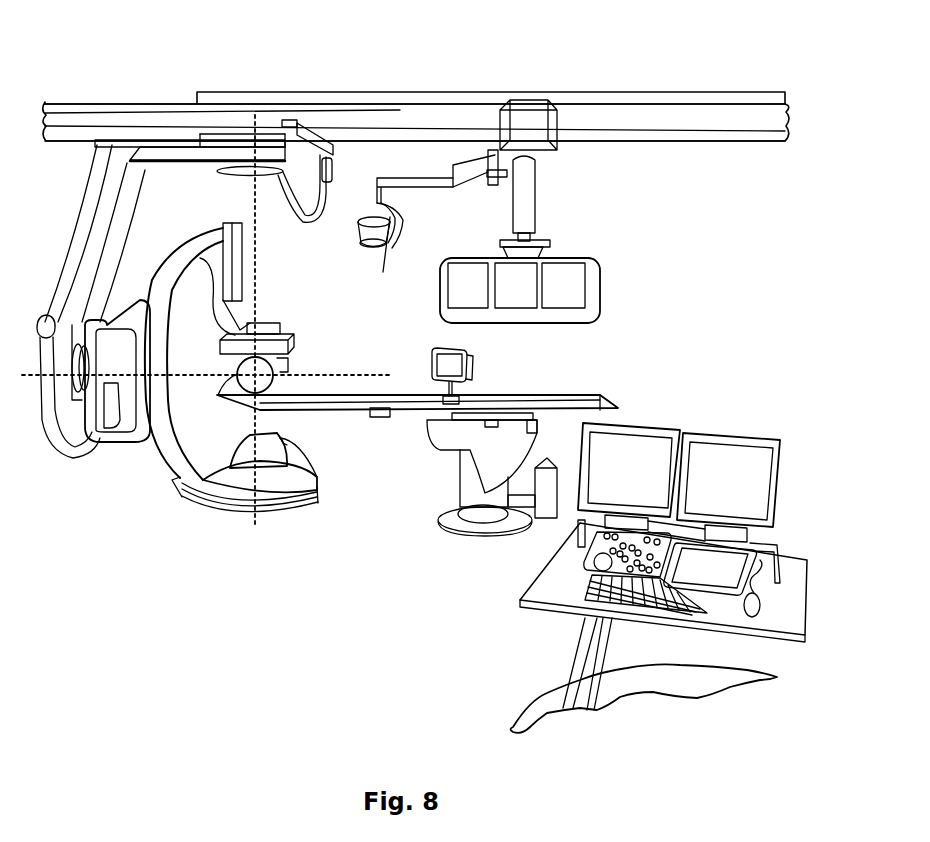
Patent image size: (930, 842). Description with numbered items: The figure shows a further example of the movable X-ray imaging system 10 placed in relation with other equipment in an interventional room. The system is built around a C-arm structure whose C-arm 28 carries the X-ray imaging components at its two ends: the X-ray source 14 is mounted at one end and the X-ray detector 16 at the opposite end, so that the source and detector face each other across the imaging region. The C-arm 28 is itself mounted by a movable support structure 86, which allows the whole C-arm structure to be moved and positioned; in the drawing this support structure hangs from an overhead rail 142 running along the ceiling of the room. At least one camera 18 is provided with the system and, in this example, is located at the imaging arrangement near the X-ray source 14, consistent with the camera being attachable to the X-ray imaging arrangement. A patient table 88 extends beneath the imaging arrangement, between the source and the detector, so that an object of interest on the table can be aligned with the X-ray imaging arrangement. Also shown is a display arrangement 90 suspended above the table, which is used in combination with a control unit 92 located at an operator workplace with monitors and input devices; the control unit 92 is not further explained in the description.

The movable X-ray imaging system 10 is at (704, 258).
The X-ray source 14 is at (283, 440).
The X-ray detector 16 is at (226, 356).
The camera 18 is at (293, 350).
The C-arm 28 is at (148, 462).
The movable support structure 86 is at (88, 218).
The patient table 88 is at (527, 402).
The display arrangement 90 is at (567, 277).
The control unit 92 is at (567, 563).
The ceiling rail 142 is at (344, 92).